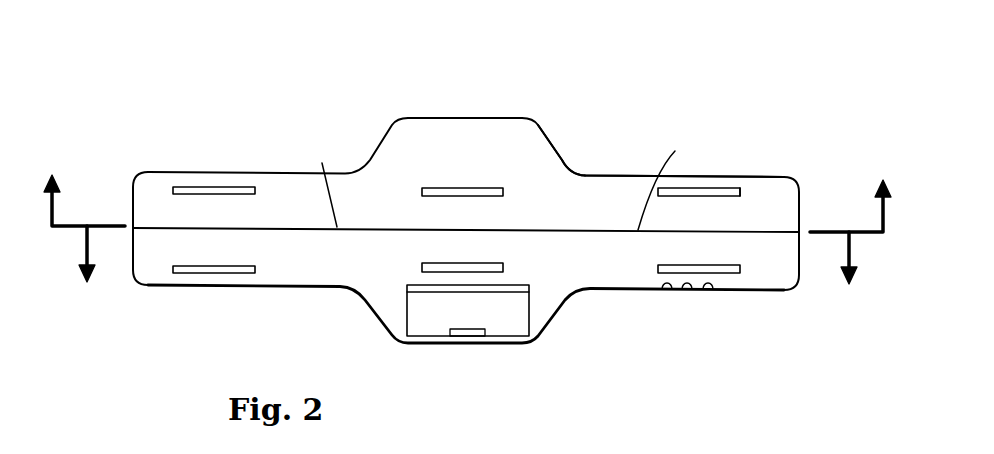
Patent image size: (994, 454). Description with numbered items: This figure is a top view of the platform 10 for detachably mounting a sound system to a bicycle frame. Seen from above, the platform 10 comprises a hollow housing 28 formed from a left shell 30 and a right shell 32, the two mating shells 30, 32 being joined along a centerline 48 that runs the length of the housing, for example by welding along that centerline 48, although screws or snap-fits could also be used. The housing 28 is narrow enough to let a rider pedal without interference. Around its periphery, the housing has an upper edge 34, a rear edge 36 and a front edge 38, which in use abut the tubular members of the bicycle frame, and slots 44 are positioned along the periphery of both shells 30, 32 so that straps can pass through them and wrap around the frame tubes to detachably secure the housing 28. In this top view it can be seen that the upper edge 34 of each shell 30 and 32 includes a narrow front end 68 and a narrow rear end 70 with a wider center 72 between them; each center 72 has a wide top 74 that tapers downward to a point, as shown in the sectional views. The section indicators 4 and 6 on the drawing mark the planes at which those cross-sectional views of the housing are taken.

The platform 10 is at (508, 83).
The hollow housing 28 is at (627, 172).
The left shell 30 is at (538, 145).
The right shell 32 is at (612, 267).
The upper edge 34 is at (322, 181).
The rear edge 36 is at (133, 205).
The front edge 38 is at (799, 205).
The slots 44 is at (232, 193).
The centerline 48 is at (670, 181).
The narrow front end 68 is at (760, 193).
The narrow rear end 70 is at (150, 188).
The wider center 72 is at (550, 160).
The wide top 74 is at (410, 132).
The section line 4 is at (468, 277).
The section line 6 is at (468, 179).